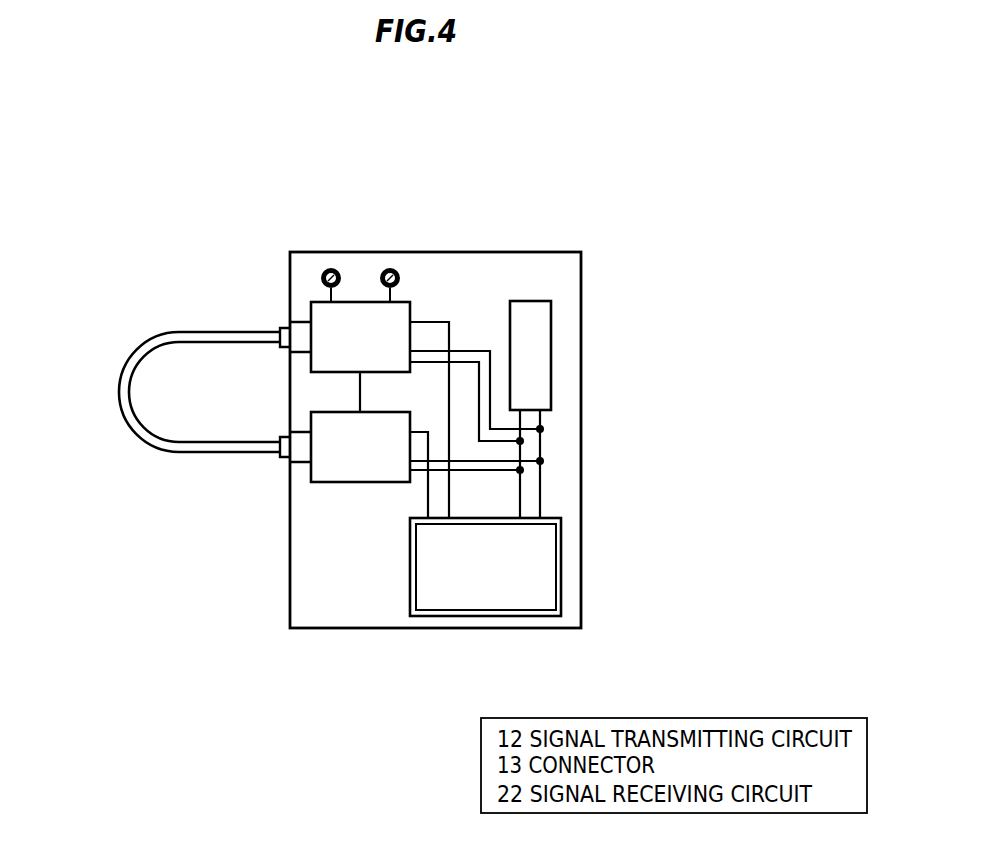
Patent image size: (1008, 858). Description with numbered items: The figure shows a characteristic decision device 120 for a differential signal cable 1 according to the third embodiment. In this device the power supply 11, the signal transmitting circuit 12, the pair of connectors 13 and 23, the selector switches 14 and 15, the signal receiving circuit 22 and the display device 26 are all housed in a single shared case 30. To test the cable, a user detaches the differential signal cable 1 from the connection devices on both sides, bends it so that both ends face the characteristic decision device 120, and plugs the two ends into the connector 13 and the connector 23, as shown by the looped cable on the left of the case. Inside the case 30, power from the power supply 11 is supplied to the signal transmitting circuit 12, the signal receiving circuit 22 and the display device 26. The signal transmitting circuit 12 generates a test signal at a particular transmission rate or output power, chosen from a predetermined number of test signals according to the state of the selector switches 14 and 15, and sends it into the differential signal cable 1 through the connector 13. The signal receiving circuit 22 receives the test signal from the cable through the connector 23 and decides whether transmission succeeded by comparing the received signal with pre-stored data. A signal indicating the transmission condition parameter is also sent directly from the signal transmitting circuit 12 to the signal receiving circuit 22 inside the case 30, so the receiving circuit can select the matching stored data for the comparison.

The differential signal cable 1 is at (118, 393).
The power supply 11 is at (533, 301).
The signal transmitting circuit 12 is at (413, 305).
The connector 13 is at (300, 354).
The selector switch 14 is at (321, 278).
The selector switch 15 is at (390, 268).
The signal receiving circuit 22 is at (356, 484).
The connector 23 is at (299, 463).
The display device 26 is at (425, 617).
The case 30 is at (458, 252).
The characteristic decision device 120 is at (603, 141).